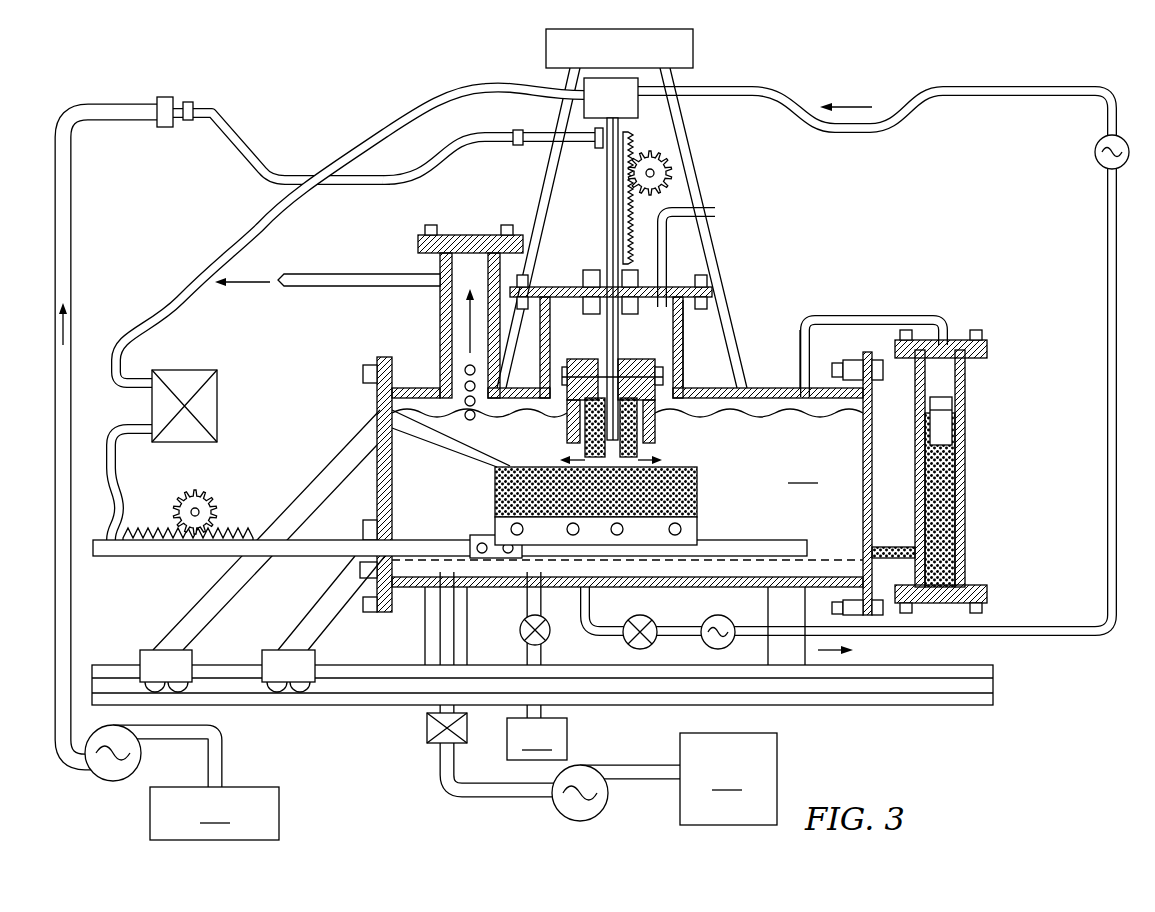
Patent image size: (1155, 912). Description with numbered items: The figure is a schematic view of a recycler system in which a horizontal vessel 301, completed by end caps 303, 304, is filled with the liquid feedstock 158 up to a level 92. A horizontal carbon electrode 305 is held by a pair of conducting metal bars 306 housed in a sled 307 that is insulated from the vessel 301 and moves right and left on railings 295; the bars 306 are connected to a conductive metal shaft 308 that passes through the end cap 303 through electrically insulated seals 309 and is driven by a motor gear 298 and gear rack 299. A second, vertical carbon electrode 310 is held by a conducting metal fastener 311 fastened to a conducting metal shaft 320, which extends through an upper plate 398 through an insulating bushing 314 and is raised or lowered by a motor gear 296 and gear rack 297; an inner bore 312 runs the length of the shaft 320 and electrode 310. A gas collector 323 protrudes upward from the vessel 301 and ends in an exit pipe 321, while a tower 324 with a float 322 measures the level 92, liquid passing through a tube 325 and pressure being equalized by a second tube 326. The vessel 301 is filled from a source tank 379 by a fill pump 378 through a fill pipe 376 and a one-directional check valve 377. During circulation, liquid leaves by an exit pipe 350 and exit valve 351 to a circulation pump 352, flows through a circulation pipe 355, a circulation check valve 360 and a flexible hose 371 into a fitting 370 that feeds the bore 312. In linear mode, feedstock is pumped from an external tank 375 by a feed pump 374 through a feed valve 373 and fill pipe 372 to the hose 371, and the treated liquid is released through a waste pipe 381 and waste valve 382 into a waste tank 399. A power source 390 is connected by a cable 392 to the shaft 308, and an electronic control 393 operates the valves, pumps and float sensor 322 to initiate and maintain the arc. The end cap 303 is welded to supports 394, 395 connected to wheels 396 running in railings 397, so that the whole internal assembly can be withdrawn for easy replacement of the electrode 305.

The level 92 is at (752, 418).
The liquid (feedstock) 158 is at (627, 436).
The railings 295 is at (840, 560).
The motor gear 296 is at (672, 173).
The gear rack 297 is at (640, 140).
The motor gear 298 is at (178, 492).
The gear rack 299 is at (152, 528).
The vessel 301 is at (755, 388).
The end cap 303 is at (377, 405).
The end cap 304 is at (863, 445).
The carbon electrode 305 is at (500, 476).
The conducting metal bars 306 is at (685, 530).
The sled 307 is at (760, 548).
The conductive metal shaft 308 is at (313, 548).
The electrically insulated seals 309 is at (353, 565).
The carbon electrode 310 is at (645, 428).
The conducting metal fastener 311 is at (655, 362).
The inner bore 312 is at (665, 240).
The electrically insulating bushing 314 is at (583, 312).
The conducting metal shaft 320 is at (606, 189).
The exit pipe 321 is at (325, 284).
The float 322 is at (940, 445).
The gas collector 323 is at (440, 300).
The tower 324 is at (960, 495).
The tube 325 is at (930, 525).
The second tube 326 is at (890, 318).
The exit pipe 350 is at (590, 612).
The exit valve 351 is at (655, 645).
The circulation pump 352 is at (712, 616).
The circulation pipe 355 is at (1107, 227).
The circulation check valve 360 is at (1095, 155).
The fitting 370 is at (640, 100).
The flexible hose 371 is at (302, 176).
The fill pipe 372 is at (120, 117).
The feed valve 373 is at (165, 97).
The feed pump 374 is at (107, 782).
The external input/tank 375 is at (214, 813).
The fill pipe 376 is at (440, 640).
The one-directional check valve 377 is at (427, 730).
The fill pump 378 is at (552, 808).
The source tank 379 is at (728, 779).
The waste pipe 381 is at (527, 612).
The waste valve 382 is at (550, 640).
The power source 390 is at (205, 408).
The cable 392 is at (405, 189).
The electronic control 393 is at (602, 59).
The support 394 is at (220, 578).
The support 395 is at (320, 608).
The wheels 396 is at (278, 691).
The railings 397 is at (353, 690).
The upper plate 398 is at (562, 285).
The waste tank 399 is at (537, 739).